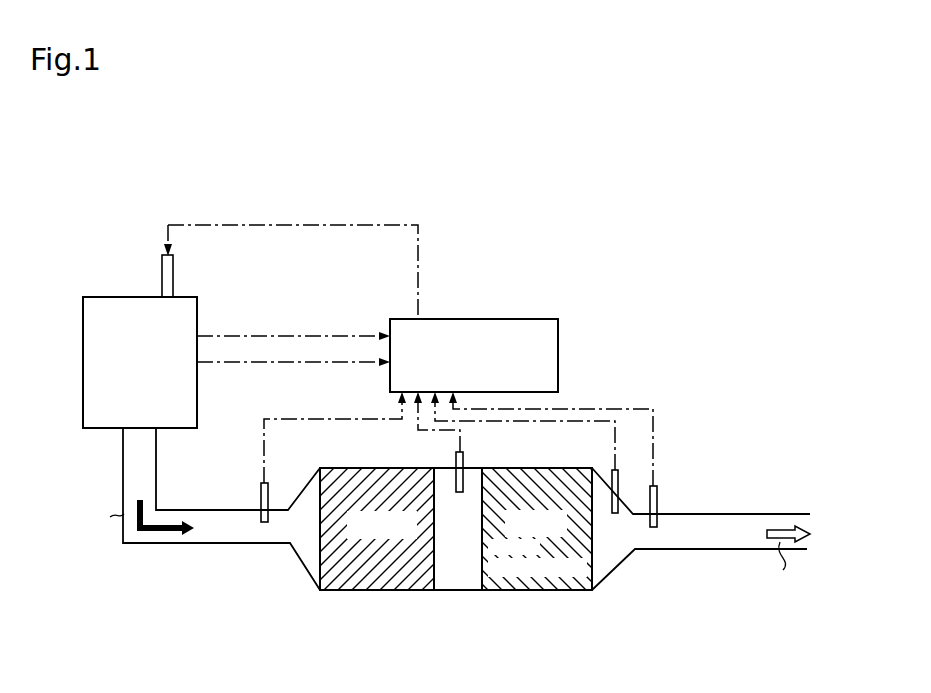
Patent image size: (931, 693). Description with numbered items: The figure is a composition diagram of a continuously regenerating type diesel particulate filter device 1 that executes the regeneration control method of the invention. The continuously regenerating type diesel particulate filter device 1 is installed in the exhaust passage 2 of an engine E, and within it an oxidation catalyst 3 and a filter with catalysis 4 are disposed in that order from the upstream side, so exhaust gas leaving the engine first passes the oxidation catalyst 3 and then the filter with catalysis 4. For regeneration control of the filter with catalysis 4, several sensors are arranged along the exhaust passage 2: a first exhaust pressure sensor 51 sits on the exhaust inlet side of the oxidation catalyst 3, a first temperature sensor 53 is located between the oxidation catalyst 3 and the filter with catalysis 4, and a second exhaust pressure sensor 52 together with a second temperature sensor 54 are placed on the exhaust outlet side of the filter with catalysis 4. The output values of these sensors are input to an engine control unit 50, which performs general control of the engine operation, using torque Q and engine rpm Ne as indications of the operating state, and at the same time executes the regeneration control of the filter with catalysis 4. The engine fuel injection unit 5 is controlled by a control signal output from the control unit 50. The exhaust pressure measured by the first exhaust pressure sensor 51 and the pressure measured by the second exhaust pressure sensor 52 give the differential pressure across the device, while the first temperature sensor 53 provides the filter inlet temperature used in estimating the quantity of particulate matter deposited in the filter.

The continuously regenerating type DPF device 1 is at (635, 234).
The exhaust passage 2 is at (205, 545).
The oxidation catalyst 3 is at (383, 573).
The filter with catalysis 4 is at (538, 575).
The engine fuel injection unit 5 is at (173, 272).
The engine control unit 50 is at (468, 333).
The first exhaust pressure sensor 51 is at (260, 496).
The second exhaust pressure sensor 52 is at (658, 500).
The first temperature sensor 53 is at (465, 462).
The second temperature sensor 54 is at (618, 480).